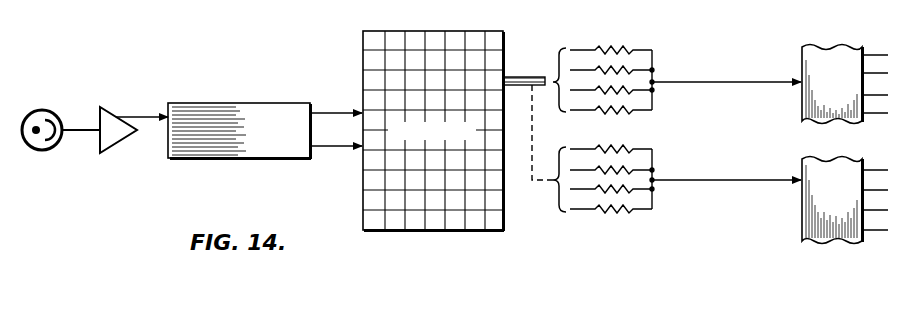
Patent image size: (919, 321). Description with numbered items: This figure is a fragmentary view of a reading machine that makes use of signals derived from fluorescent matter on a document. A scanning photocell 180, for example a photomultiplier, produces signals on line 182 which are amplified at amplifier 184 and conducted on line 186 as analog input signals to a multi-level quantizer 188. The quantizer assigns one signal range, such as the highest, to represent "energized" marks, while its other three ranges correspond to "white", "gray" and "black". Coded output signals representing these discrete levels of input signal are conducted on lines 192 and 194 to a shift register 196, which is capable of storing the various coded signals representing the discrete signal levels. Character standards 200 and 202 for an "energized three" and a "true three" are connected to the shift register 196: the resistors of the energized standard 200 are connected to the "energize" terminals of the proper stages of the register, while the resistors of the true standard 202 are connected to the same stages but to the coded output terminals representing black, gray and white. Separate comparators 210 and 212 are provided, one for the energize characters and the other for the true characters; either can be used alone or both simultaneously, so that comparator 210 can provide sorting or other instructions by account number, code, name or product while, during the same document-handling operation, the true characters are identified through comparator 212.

The scanning photocell 180 is at (40, 109).
The line 182 is at (77, 110).
The amplifier 184 is at (108, 113).
The line 186 is at (150, 113).
The multi-level quantizer 188 is at (208, 103).
The line 192 is at (322, 112).
The line 194 is at (340, 150).
The shift register 196 is at (412, 30).
The character standard 200 is at (614, 39).
The character standard 202 is at (608, 149).
The comparator 210 is at (845, 84).
The comparator 212 is at (845, 200).